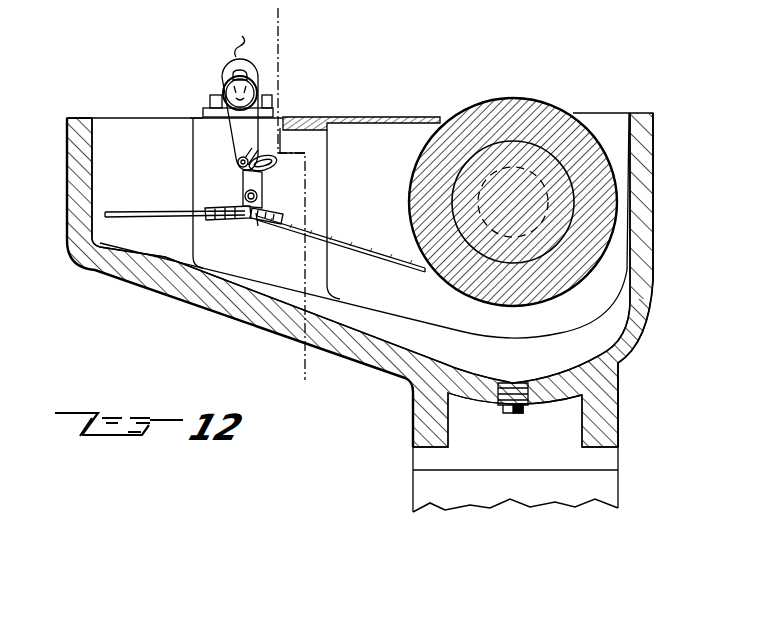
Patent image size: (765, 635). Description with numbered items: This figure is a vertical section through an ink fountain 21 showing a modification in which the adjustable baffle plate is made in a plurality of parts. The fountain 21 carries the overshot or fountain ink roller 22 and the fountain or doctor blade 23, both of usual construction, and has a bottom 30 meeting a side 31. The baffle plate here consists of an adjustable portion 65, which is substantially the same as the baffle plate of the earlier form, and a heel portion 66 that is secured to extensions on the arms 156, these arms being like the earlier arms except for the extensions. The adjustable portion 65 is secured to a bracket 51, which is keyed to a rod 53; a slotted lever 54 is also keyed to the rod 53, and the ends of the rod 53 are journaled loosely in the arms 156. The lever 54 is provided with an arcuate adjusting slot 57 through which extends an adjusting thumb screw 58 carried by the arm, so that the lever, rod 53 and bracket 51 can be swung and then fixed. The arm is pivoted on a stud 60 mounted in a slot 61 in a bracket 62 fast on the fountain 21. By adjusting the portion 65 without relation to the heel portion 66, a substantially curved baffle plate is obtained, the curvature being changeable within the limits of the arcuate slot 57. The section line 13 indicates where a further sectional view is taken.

The section line 13- 13 is at (296, 26).
The ink fountain 21 is at (648, 320).
The fountain ink roller 22 is at (546, 108).
The doctor blade 23 is at (404, 118).
The bottom 30 is at (388, 335).
The side 31 is at (70, 180).
The bracket 51 is at (267, 226).
The rod 53 is at (282, 215).
The slotted lever 54 is at (265, 190).
The arcuate adjusting slot 57 is at (280, 165).
The adjusting thumb screw 58 is at (238, 160).
The stud 60 is at (259, 91).
The slot 61 is at (231, 76).
The bracket 62 is at (228, 41).
The adjustable portion 65 is at (342, 257).
The heel portion 66 is at (182, 217).
The arm 156 is at (258, 128).